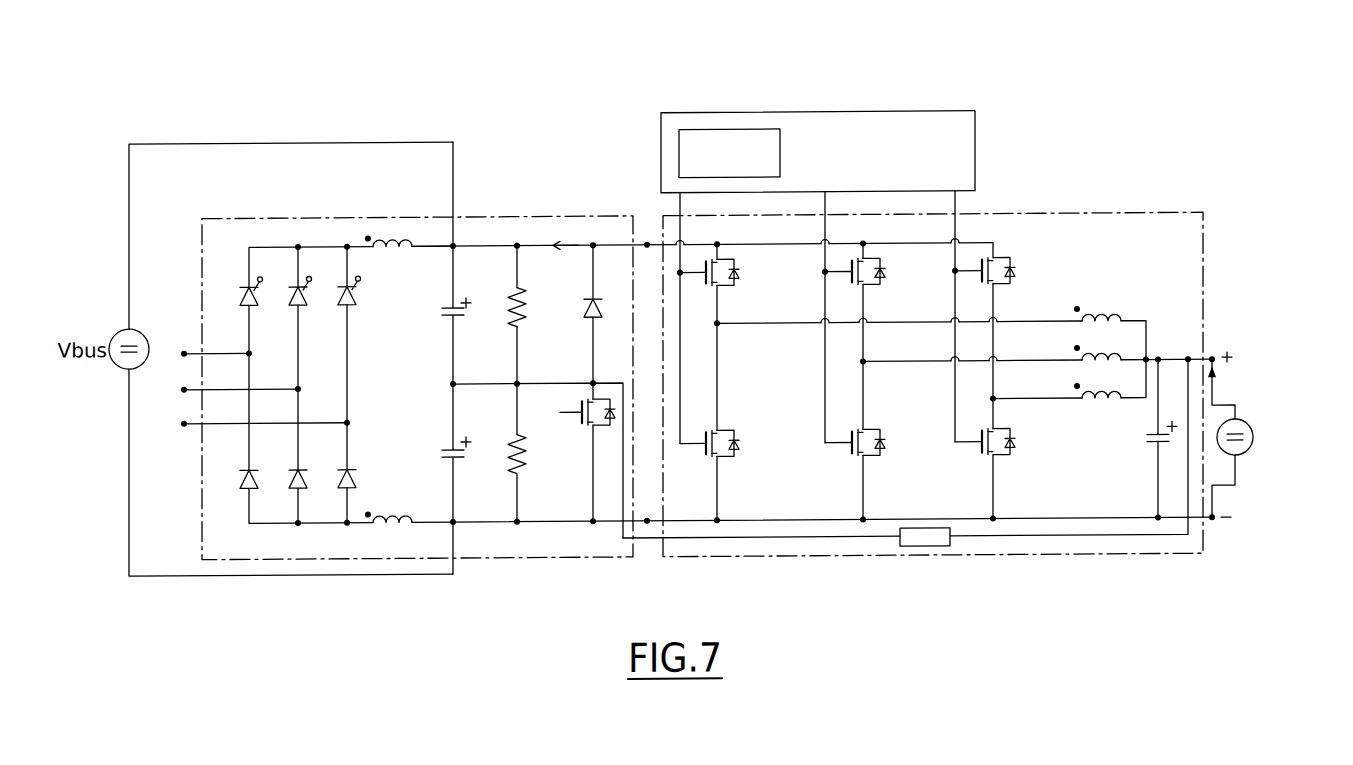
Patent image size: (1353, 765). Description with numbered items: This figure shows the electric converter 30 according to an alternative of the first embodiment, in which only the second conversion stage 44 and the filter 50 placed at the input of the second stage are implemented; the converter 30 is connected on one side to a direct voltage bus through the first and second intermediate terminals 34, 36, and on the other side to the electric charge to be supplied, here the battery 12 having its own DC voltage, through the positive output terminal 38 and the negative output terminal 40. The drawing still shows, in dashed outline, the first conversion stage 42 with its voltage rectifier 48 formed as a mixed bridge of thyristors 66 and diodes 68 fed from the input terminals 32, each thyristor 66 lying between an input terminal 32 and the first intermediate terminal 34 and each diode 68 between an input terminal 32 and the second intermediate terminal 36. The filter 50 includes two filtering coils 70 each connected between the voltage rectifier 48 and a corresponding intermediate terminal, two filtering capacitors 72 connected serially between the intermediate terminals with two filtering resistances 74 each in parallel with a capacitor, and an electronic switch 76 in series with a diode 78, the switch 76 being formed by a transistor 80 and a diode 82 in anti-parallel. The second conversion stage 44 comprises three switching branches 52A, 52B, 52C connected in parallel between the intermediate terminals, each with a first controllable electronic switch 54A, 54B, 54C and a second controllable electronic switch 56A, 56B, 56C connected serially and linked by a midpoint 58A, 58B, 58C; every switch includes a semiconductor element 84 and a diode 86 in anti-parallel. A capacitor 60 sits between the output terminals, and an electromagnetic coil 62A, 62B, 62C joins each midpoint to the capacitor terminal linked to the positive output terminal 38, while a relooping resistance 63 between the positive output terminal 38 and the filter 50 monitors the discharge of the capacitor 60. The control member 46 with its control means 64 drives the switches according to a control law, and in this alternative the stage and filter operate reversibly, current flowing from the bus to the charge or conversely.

The battery 12 is at (1246, 464).
The electric converter 30 is at (1136, 155).
The input terminals 32 is at (182, 426).
The first intermediate terminal 34 is at (647, 246).
The second intermediate terminal 36 is at (647, 530).
The positive output terminal 38 is at (1213, 359).
The negative output terminal 40 is at (1214, 531).
The first conversion stage 42 is at (367, 219).
The second conversion stage 44 is at (1038, 219).
The control member 46 is at (832, 116).
The voltage rectifier 48 is at (311, 243).
The filter 50 is at (545, 243).
The first switching branch 52A is at (767, 481).
The second switching branch 52B is at (958, 482).
The third switching branch 52C is at (1054, 314).
The first controllable electronic switch 54A is at (738, 296).
The first controllable electronic switch 54B is at (872, 295).
The first controllable electronic switch 54C is at (1030, 270).
The second controllable electronic switch 56A is at (742, 421).
The second controllable electronic switch 56B is at (878, 472).
The second controllable electronic switch 56C is at (1018, 467).
The midpoint 58A is at (720, 332).
The midpoint 58B is at (866, 372).
The midpoint 58C is at (1080, 401).
The capacitor 60 is at (1150, 456).
The electromagnetic coil 62A is at (1118, 316).
The electromagnetic coil 62B is at (1080, 355).
The electromagnetic coil 62C is at (1077, 410).
The relooping resistance 63 is at (925, 553).
The means for controlling the electronic switches 64 is at (729, 153).
The thyristors 66 is at (344, 310).
The diodes 68 is at (296, 474).
The filtering coils 70 is at (399, 240).
The filtering capacitors 72 is at (444, 314).
The filtering resistances 74 is at (521, 292).
The electronic switch 76 is at (576, 398).
The diode 78 is at (589, 318).
The transistor 80 is at (574, 420).
The diode 82 is at (612, 433).
The semiconductor element 84 is at (706, 289).
The diode 86 is at (740, 276).